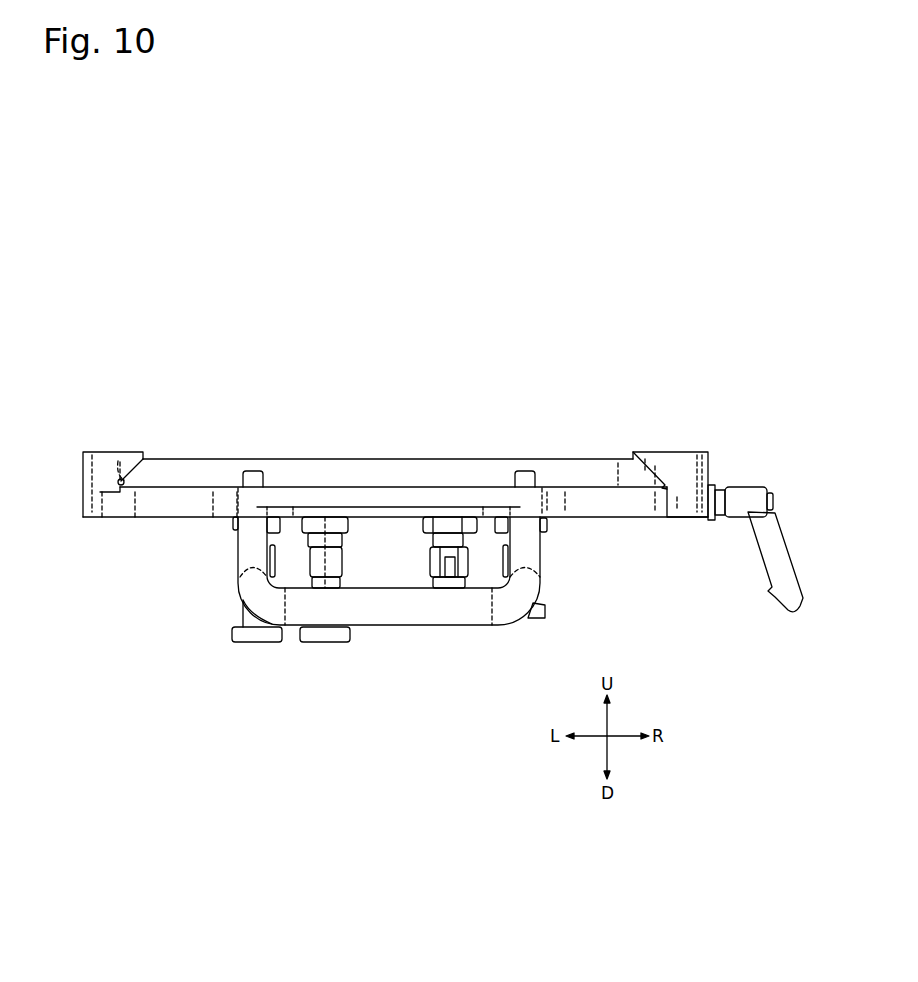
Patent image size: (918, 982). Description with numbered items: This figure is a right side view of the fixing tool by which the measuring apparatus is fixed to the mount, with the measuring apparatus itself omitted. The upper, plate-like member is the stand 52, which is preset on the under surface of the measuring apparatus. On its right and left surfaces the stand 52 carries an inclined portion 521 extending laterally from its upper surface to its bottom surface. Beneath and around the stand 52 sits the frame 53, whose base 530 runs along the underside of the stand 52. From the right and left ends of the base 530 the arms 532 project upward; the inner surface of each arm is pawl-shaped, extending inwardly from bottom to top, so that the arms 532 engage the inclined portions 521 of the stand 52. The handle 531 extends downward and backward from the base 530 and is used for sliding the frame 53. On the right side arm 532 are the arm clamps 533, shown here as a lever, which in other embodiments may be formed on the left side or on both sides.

The stand 52 is at (375, 458).
The inclined portion 521 is at (123, 472).
The frame 53 is at (165, 519).
The base 530 is at (595, 507).
The handle 531 is at (390, 617).
The arms 532 is at (100, 450).
The arm clamps 533 is at (778, 545).